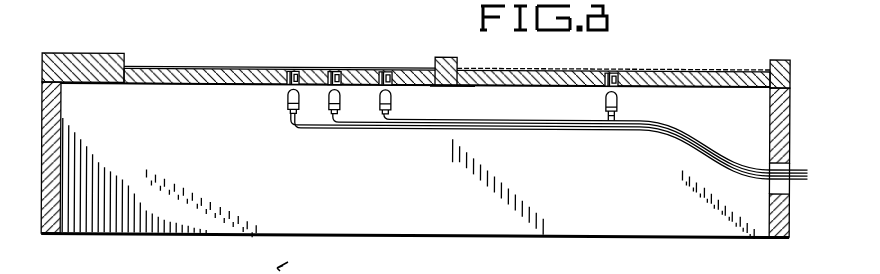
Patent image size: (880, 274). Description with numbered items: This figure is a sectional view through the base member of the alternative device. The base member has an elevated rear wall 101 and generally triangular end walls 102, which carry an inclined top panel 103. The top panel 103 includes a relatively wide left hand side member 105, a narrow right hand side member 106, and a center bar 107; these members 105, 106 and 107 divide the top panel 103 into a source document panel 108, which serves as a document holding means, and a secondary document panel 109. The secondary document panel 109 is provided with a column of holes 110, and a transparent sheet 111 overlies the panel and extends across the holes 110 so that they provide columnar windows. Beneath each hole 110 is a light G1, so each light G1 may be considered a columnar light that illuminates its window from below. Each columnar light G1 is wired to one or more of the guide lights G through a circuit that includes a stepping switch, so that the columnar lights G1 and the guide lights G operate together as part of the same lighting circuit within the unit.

The elevated rear wall 101 is at (398, 182).
The generally triangular end walls 102 is at (62, 118).
The inclined top panel 103 is at (452, 84).
The left hand side member 105 is at (108, 35).
The right hand side member 106 is at (776, 56).
The center bar 107 is at (437, 55).
The source document panel 108 is at (170, 66).
The secondary document panel 109 is at (683, 67).
The holes 110 is at (612, 69).
The transparent sheet 111 is at (544, 57).
The guide lights G is at (287, 95).
The columnar light G1 is at (618, 96).